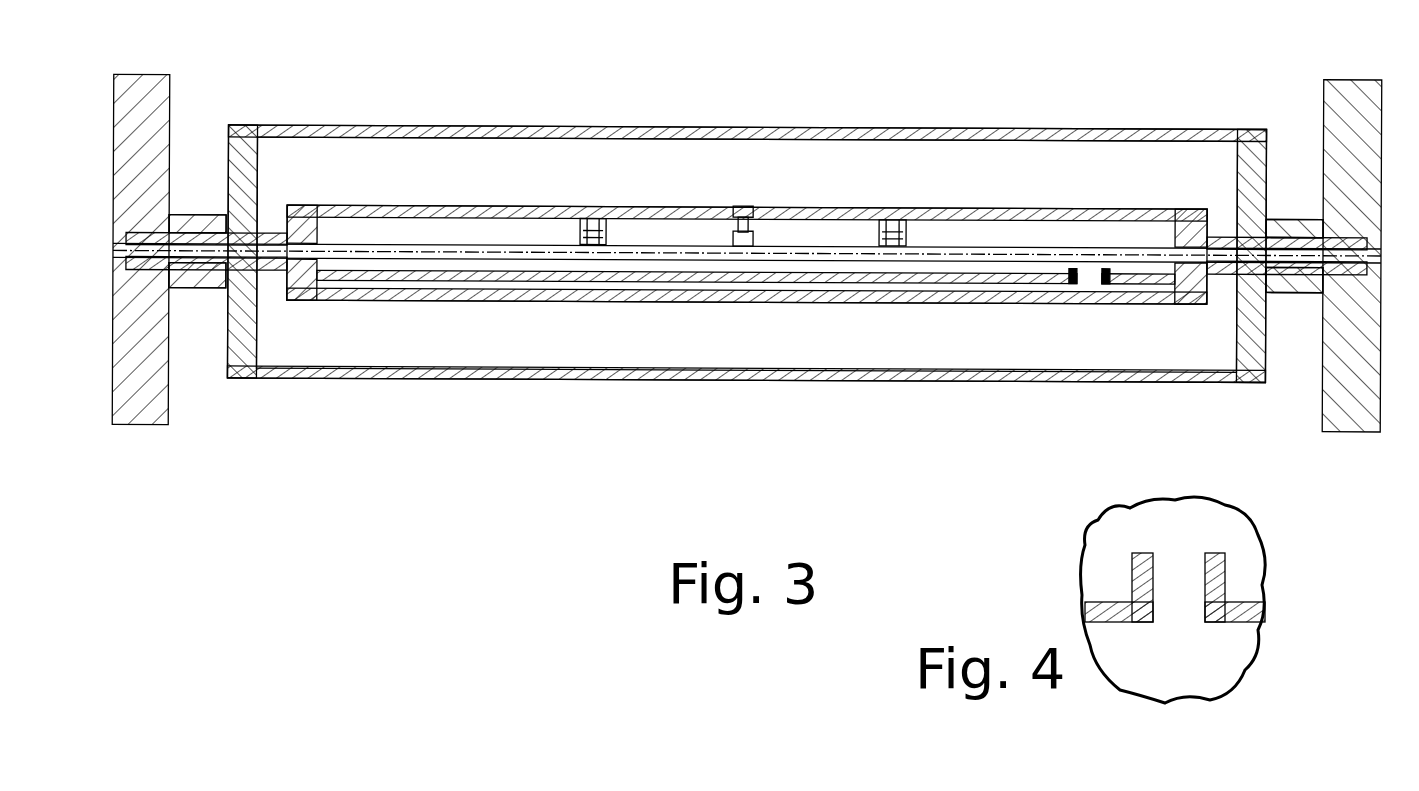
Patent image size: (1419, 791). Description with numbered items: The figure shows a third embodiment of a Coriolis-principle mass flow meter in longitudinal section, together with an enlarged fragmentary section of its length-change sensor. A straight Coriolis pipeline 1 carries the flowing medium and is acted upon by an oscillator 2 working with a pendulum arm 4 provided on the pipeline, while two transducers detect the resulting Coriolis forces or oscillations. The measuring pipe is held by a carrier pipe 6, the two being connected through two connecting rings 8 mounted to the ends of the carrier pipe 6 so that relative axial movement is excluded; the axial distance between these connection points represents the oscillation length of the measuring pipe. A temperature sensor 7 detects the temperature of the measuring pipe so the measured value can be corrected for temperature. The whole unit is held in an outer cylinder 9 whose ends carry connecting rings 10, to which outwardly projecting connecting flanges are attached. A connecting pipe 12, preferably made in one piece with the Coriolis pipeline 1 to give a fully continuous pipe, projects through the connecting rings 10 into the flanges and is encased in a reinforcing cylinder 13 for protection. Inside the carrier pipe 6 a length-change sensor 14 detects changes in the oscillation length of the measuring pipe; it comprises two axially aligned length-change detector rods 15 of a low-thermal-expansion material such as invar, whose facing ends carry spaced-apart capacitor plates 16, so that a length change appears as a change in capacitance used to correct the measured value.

In FIG. 3, the Coriolis pipeline 1 is at (665, 258).
In FIG. 3, the oscillator 2 is at (766, 207).
In FIG. 3, the pendulum arm 4 is at (738, 213).
In FIG. 3, the carrier pipe 6 is at (410, 300).
In FIG. 3, the temperature sensor 7 is at (190, 217).
In FIG. 3, the connecting rings 8 is at (312, 300).
In FIG. 3, the outer cylinder 9 is at (365, 127).
In FIG. 3, the connecting rings 10 is at (248, 185).
In FIG. 3, the connecting pipe 12 is at (210, 270).
In FIG. 3, the reinforcing cylinder 13 is at (205, 233).
In FIG. 3, the length-change sensor 14 is at (1058, 291).
In FIG. 3, the length-change detector rods 15 is at (880, 283).
In FIG. 4, the length-change detector rods 15 is at (1120, 622).
In FIG. 4, the capacitor plates 16 is at (1132, 582).